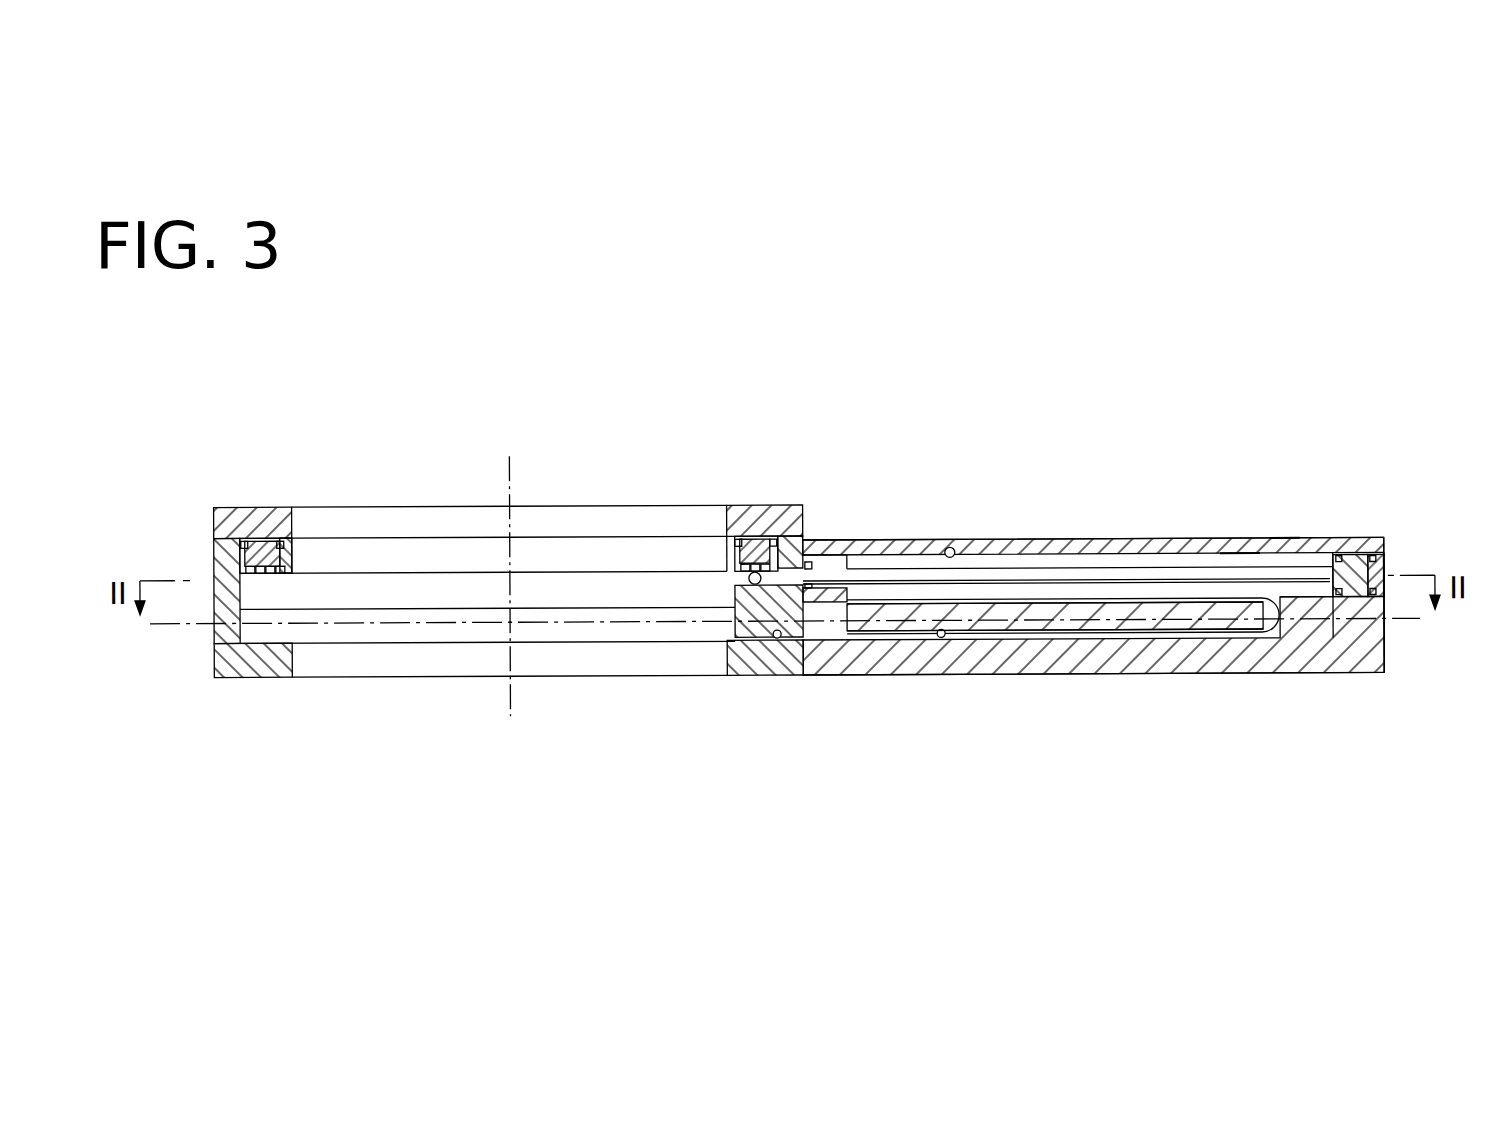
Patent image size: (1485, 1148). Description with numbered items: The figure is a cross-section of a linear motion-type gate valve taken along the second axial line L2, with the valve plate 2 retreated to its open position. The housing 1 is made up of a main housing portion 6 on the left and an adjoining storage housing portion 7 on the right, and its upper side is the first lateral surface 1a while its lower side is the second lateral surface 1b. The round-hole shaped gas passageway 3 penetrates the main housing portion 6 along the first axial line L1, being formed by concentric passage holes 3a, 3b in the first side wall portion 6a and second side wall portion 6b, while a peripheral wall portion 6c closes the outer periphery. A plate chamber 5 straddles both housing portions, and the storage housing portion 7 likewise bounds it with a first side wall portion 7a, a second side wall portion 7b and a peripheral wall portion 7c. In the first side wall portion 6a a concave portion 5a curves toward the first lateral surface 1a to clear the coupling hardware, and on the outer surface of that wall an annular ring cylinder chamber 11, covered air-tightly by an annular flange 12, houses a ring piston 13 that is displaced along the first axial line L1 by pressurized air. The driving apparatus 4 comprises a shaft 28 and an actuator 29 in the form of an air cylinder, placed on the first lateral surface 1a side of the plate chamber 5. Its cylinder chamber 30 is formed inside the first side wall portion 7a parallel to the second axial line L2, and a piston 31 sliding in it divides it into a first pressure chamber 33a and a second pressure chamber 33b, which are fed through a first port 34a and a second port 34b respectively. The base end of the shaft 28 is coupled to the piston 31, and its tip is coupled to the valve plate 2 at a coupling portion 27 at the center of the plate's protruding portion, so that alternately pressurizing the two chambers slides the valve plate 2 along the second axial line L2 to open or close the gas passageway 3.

The housing 1 is at (393, 462).
The first lateral surface 1a is at (1188, 540).
The second lateral surface 1b is at (1240, 675).
The valve plate 2 is at (1095, 627).
The gas passageway 3 is at (580, 518).
The passage hole 3a is at (707, 518).
The passage hole 3b is at (727, 658).
The driving apparatus 4 is at (1077, 490).
The plate chamber 5 is at (941, 638).
The concave portion 5a is at (263, 587).
The main housing portion 6 is at (409, 690).
The first side wall portion 6a is at (292, 552).
The second side wall portion 6b is at (278, 665).
The peripheral wall portion 6c is at (213, 608).
The storage housing portion 7 is at (1142, 692).
The first side wall portion 7a is at (1030, 540).
The second side wall portion 7b is at (1013, 658).
The peripheral wall portion 7c is at (1372, 645).
The ring cylinder chamber 11 is at (258, 515).
The annular flange 12 is at (247, 512).
The ring piston 13 is at (752, 520).
The coupling portion 27 is at (717, 585).
The shaft 28 is at (1125, 580).
The actuator 29 is at (1283, 535).
The cylinder chamber 30 is at (952, 543).
The piston 31 is at (1340, 554).
The first pressure chamber 33a is at (1385, 566).
The second pressure chamber 33b is at (1237, 552).
The first port 34a is at (1362, 552).
The second port 34b is at (845, 556).
The first axial line L1 is at (509, 568).
The second axial line L2 is at (804, 625).